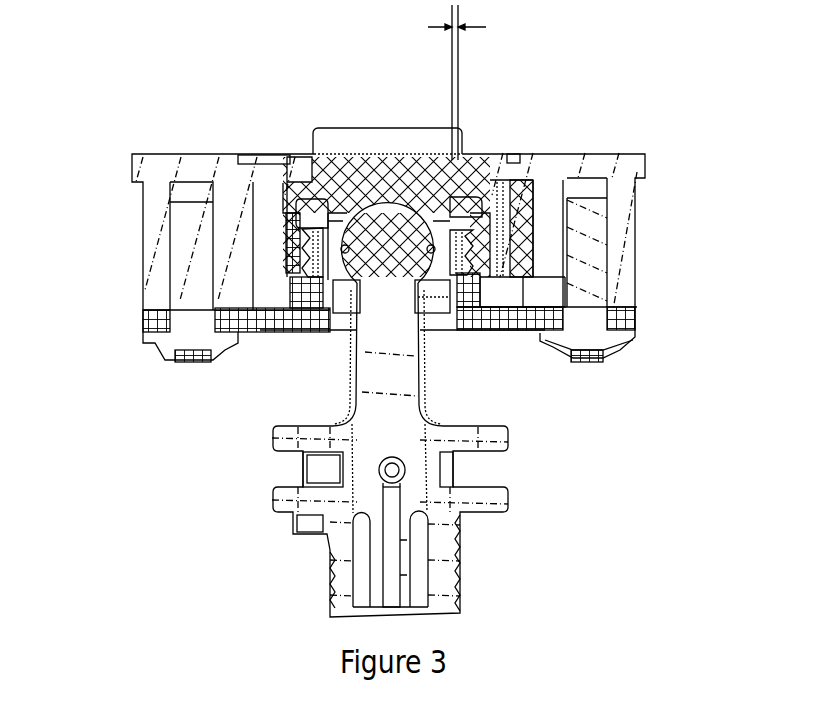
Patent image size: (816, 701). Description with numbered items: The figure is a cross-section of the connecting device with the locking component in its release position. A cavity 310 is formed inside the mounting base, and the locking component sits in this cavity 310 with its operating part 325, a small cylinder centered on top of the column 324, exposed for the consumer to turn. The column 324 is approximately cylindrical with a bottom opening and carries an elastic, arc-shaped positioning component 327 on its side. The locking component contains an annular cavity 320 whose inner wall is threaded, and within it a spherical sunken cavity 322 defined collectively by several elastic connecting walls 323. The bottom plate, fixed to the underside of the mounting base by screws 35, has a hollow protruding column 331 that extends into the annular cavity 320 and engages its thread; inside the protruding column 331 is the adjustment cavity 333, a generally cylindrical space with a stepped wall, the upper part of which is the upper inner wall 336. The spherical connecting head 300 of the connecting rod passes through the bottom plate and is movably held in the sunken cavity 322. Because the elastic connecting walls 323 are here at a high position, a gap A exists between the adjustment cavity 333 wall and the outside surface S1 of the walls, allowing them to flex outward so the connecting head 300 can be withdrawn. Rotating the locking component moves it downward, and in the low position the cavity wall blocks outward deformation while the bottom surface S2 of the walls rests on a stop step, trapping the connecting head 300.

The connecting head 300 is at (423, 270).
The cavity 310 is at (265, 232).
The annular cavity 320 is at (305, 217).
The sunken cavity 322 is at (333, 172).
The elastic connecting wall 323 is at (328, 285).
The column 324 is at (297, 225).
The operating part 325 is at (377, 127).
The positioning component 327 is at (472, 262).
The protruding column 331 is at (290, 263).
The adjustment cavity 333 is at (297, 302).
The upper inner wall 336 is at (470, 255).
The screw 35 is at (610, 345).
The outside surface of the elastic connecting wall S1 is at (470, 290).
The bottom surface of the elastic connecting wall S2 is at (447, 283).
The gap A is at (477, 82).